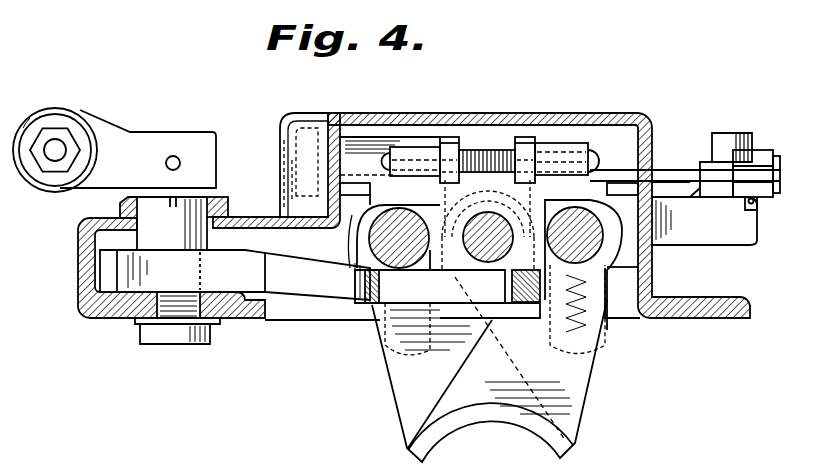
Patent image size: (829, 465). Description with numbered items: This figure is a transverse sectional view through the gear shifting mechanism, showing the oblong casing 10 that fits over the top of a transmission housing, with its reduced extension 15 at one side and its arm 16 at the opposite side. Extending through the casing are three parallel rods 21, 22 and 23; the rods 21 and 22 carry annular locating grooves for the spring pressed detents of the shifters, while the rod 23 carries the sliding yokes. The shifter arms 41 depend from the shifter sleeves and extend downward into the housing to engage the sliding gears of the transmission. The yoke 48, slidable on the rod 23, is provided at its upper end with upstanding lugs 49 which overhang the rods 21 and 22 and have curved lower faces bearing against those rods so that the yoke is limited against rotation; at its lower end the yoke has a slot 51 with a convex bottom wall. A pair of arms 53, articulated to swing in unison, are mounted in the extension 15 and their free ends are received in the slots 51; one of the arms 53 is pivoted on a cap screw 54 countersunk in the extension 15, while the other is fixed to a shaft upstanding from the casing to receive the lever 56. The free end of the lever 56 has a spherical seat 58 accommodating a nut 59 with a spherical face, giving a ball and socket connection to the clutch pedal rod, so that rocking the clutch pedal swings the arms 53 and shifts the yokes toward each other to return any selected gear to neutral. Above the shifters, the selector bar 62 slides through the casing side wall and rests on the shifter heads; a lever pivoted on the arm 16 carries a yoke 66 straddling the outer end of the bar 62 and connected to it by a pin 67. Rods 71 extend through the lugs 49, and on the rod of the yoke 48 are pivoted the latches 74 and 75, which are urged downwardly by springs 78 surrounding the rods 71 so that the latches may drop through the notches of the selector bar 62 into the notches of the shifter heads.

The casing 10 is at (626, 113).
The reduced extension 15 is at (82, 264).
The arm 16 is at (704, 213).
The rod 21 is at (598, 242).
The rod 22 is at (405, 228).
The rod 23 is at (487, 228).
The shifter arms 41 is at (489, 369).
The yoke 48 is at (580, 269).
The upstanding lugs 49 is at (405, 147).
The slots 51 is at (529, 302).
The arms 53 is at (325, 290).
The cap screw 54 is at (217, 200).
The lever 56 is at (110, 130).
The spherical seat 58 is at (72, 122).
The nut 59 is at (44, 130).
The selector bar 62 is at (672, 172).
The yoke 66 is at (780, 168).
The pin 67 is at (760, 152).
The rods 71 is at (594, 160).
The latch 74 is at (527, 137).
The latch 75 is at (452, 137).
The springs 78 is at (480, 155).